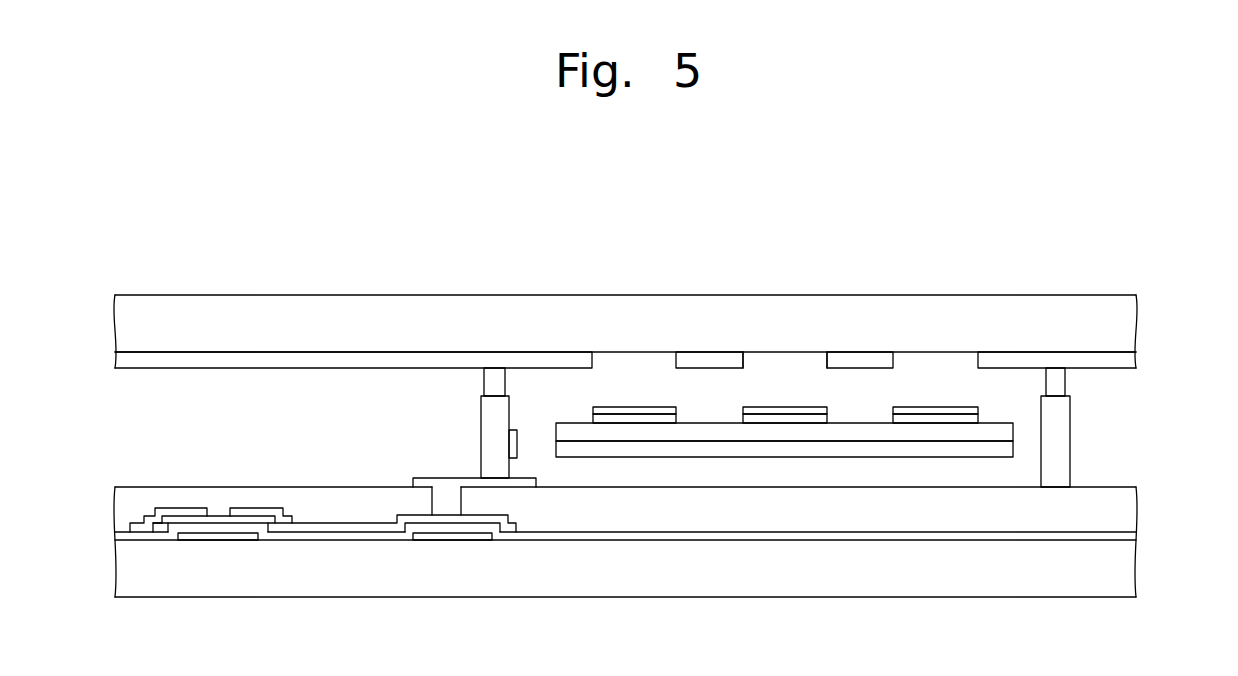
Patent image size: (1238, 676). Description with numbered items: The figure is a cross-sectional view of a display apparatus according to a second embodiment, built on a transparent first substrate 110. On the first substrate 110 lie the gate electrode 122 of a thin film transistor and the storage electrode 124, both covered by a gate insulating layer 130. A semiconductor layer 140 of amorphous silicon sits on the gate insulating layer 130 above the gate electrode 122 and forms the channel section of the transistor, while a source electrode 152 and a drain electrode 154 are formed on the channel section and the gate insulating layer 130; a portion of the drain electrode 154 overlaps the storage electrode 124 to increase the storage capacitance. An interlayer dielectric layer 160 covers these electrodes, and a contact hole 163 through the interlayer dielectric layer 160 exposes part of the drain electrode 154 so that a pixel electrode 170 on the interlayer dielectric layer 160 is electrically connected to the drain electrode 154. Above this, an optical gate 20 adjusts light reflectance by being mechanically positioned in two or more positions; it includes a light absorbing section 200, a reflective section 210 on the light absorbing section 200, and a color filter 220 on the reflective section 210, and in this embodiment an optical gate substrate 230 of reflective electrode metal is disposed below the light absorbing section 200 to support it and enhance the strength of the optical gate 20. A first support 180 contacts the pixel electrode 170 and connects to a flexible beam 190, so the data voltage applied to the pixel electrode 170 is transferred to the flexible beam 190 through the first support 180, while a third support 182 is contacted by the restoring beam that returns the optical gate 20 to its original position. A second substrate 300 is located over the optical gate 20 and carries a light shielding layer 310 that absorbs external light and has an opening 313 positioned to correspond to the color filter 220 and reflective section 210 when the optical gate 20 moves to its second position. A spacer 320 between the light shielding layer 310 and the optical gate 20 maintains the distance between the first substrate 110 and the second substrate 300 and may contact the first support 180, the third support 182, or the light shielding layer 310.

The optical gate 20 is at (997, 413).
The first substrate 110 is at (1130, 570).
The gate electrode 122 is at (205, 535).
The storage electrode 124 is at (432, 537).
The gate insulating layer 130 is at (1130, 536).
The semiconductor layer 140 is at (273, 527).
The source electrode 152 is at (140, 527).
The drain electrode 154 is at (348, 527).
The interlayer dielectric layer 160 is at (1130, 510).
The contact hole 163 is at (462, 502).
The pixel electrode 170 is at (527, 483).
The first support 180 is at (488, 410).
The third support 182 is at (1060, 472).
The flexible beam 190 is at (512, 443).
The light absorbing section 200 is at (1013, 432).
The reflective section 210 is at (612, 418).
The color filter 220 is at (642, 410).
The optical gate substrate 230 is at (1013, 448).
The second substrate 300 is at (1131, 318).
The light shielding layer 310 is at (1131, 357).
The opening 313 is at (784, 363).
The spacer 320 is at (1063, 378).